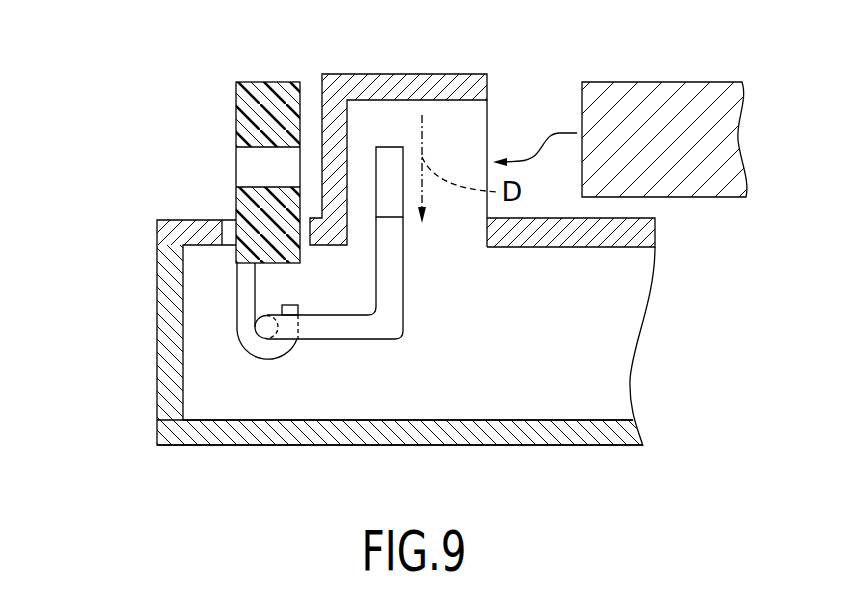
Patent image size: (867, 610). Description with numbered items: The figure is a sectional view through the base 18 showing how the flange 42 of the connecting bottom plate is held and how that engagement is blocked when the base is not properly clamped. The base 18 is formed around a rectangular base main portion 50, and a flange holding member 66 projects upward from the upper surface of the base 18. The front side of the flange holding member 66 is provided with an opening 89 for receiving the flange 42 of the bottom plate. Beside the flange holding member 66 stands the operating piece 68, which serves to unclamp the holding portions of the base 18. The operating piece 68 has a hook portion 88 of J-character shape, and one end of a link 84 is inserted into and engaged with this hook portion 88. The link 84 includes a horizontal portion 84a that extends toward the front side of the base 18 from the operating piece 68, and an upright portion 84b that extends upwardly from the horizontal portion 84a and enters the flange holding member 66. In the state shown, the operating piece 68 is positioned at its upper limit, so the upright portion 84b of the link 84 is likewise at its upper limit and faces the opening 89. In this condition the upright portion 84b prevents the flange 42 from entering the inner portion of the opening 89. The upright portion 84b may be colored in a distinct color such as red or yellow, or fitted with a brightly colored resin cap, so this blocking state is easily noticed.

The base 18 is at (381, 313).
The flange 42 is at (640, 82).
The base main portion 50 is at (597, 420).
The flange holding member 66 is at (428, 73).
The operating piece 68 is at (236, 95).
The link 84 is at (366, 275).
The horizontal portion 84a is at (360, 330).
The upright portion 84b is at (405, 272).
The hook portion 88 is at (292, 305).
The opening 89 is at (487, 118).